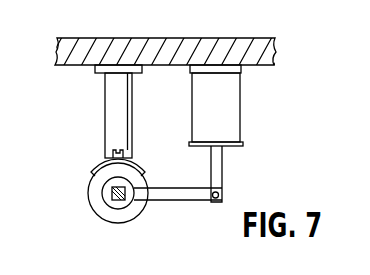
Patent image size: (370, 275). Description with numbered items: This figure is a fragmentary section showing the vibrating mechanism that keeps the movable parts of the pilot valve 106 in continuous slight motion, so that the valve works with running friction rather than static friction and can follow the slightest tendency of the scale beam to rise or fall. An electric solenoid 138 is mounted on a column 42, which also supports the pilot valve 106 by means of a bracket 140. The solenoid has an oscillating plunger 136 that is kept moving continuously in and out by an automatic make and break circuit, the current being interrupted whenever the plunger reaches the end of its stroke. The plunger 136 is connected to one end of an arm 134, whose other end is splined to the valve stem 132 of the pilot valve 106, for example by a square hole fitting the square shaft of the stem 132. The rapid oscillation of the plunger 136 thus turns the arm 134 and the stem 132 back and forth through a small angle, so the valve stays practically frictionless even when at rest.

The column 42 is at (153, 50).
The pilot valve 106 is at (98, 192).
The valve stem 132 is at (116, 199).
The arm 134 is at (184, 194).
The oscillating plunger 136 is at (217, 165).
The electric solenoid 138 is at (222, 103).
The bracket 140 is at (112, 107).